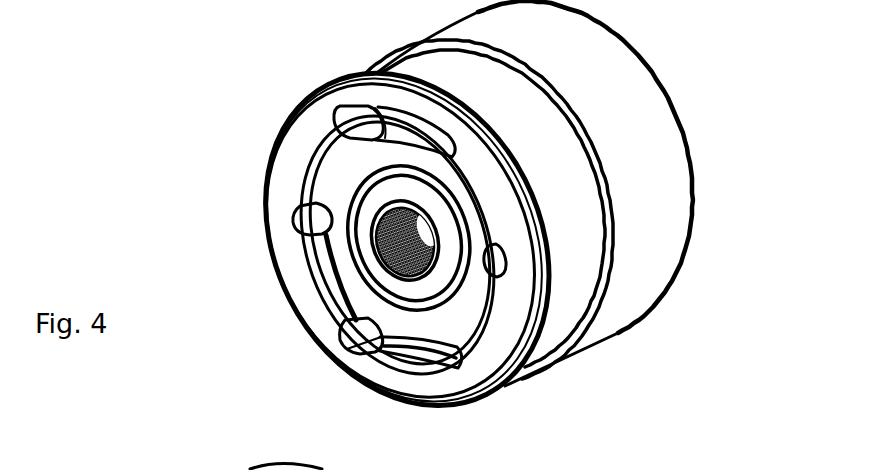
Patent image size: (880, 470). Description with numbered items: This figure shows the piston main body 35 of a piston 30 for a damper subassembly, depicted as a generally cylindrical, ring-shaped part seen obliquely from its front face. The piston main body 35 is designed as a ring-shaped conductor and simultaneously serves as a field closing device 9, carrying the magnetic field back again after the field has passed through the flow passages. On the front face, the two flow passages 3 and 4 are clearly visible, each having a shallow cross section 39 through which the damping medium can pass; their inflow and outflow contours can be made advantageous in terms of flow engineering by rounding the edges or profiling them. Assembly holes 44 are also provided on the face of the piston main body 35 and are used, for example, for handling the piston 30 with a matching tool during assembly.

The flow passage 3 is at (357, 117).
The flow passage 4 is at (376, 355).
The field closing device 9 is at (617, 90).
The piston 30 is at (667, 233).
The piston main body 35 is at (653, 167).
The shallow cross section 39 is at (422, 370).
The assembly holes 44 is at (312, 224).